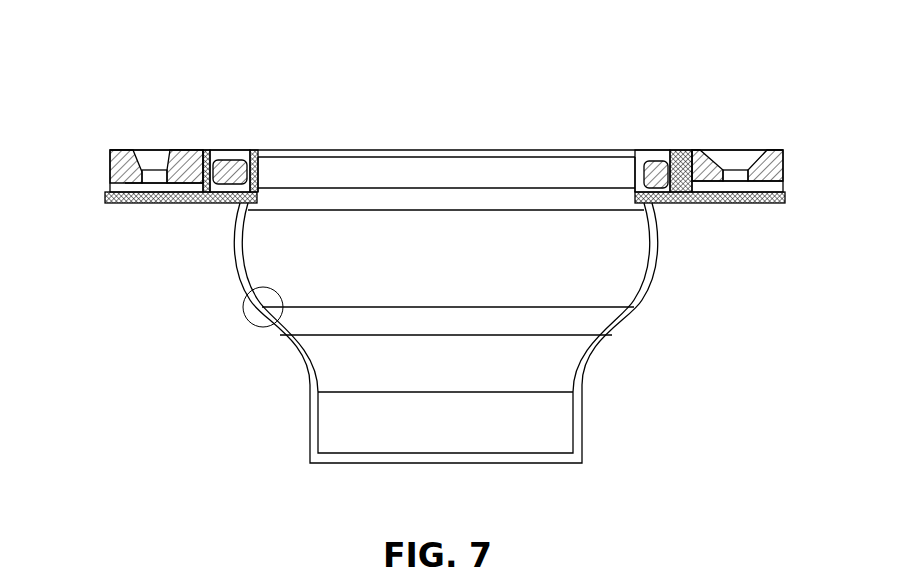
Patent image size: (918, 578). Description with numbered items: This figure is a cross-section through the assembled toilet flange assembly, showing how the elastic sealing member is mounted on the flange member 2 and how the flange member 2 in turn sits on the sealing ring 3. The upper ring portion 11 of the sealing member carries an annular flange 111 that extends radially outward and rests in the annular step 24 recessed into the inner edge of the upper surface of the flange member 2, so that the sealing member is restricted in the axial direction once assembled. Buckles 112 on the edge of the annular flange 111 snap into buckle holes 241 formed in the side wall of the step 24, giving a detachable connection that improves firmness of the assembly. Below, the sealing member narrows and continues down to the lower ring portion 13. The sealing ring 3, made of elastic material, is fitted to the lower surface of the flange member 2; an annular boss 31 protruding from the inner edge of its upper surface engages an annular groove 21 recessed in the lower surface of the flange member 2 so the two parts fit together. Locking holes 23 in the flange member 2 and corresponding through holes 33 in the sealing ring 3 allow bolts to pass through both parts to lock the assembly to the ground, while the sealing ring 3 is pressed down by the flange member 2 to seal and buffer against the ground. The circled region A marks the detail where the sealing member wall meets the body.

The flange member 2 is at (790, 153).
The annular groove 21 is at (695, 150).
The locking holes 23 is at (753, 150).
The annular step 24 is at (663, 150).
The buckle holes 241 is at (222, 149).
The sealing ring 3 is at (103, 197).
The annular boss 31 is at (663, 207).
The through holes 33 is at (108, 160).
The upper ring portion 11 is at (222, 201).
The annular flange 111 is at (255, 149).
The buckles 112 is at (202, 149).
The lower ring portion 13 is at (583, 433).
The detail region A is at (254, 319).